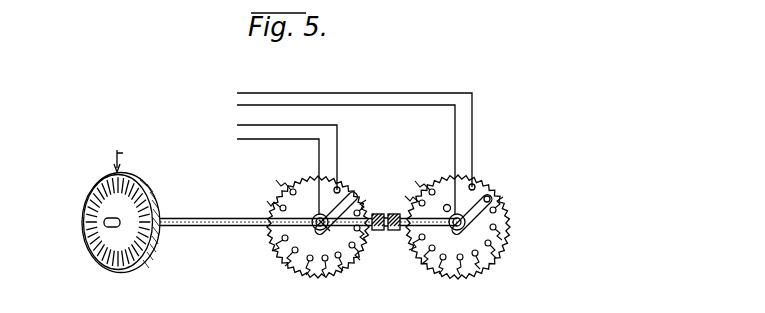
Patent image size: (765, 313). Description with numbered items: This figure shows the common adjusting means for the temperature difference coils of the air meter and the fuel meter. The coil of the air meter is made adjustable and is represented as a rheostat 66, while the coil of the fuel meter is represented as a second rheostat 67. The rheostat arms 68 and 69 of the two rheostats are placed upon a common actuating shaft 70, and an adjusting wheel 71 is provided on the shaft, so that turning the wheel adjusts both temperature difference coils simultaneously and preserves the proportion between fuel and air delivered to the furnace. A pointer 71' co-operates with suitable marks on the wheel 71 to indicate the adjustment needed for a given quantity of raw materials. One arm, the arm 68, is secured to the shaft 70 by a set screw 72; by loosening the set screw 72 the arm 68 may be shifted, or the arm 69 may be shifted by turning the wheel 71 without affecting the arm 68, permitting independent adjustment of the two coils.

The rheostat 66 is at (485, 182).
The rheostat 67 is at (349, 181).
The rheostat arm 68 is at (491, 199).
The rheostat arm 69 is at (353, 206).
The actuating shaft 70 is at (218, 218).
The adjusting wheel 71 is at (133, 218).
The pointer 71' is at (134, 158).
The set screw 72 is at (446, 204).